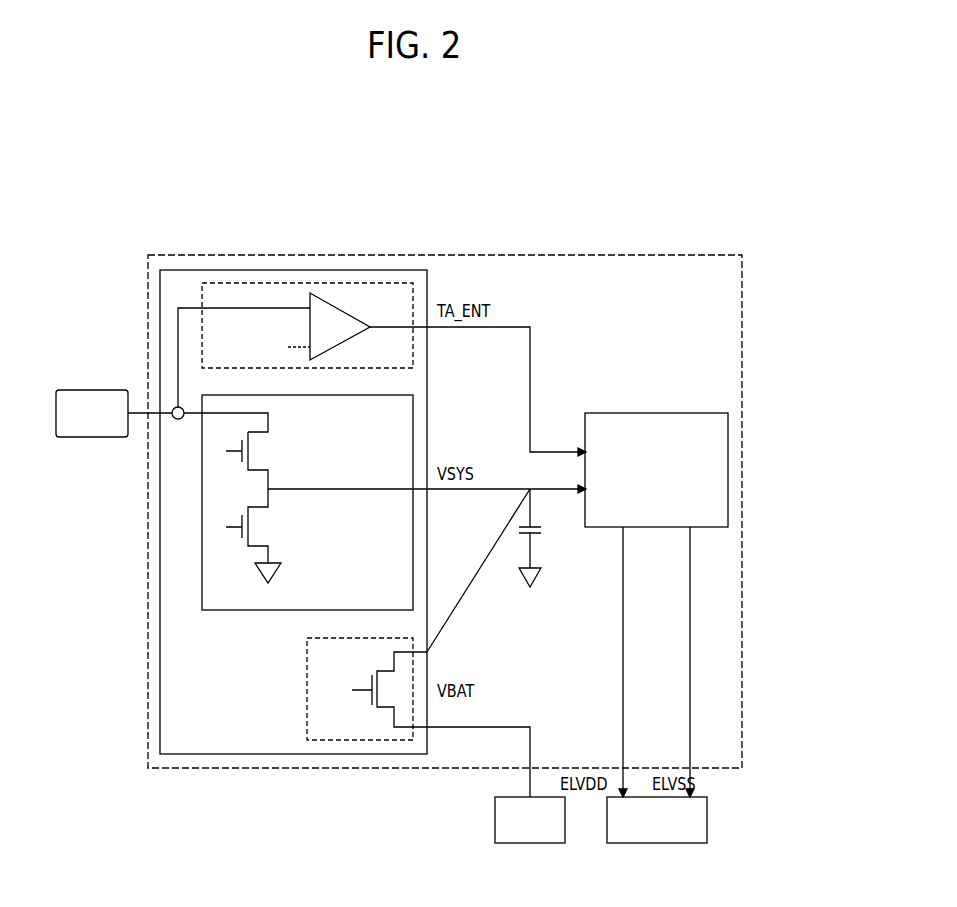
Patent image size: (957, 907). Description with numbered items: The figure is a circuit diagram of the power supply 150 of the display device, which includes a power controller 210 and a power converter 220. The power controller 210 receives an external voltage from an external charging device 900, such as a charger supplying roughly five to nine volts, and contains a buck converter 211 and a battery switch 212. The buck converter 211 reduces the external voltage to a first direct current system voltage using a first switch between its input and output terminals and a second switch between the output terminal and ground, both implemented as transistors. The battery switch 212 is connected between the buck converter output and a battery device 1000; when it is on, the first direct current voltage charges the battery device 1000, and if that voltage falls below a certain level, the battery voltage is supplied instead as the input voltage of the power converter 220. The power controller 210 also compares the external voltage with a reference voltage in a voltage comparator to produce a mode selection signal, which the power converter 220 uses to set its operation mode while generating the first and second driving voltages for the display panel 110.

The power supply 150 is at (502, 207).
The power controller 210 is at (427, 362).
The buck converter 211 is at (413, 418).
The battery switch 212 is at (307, 681).
The power converter 220 is at (655, 412).
The external charging device 900 is at (91, 390).
The battery device 1000 is at (530, 845).
The display panel 110 is at (657, 845).